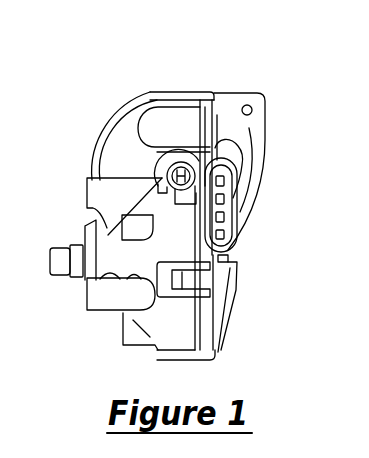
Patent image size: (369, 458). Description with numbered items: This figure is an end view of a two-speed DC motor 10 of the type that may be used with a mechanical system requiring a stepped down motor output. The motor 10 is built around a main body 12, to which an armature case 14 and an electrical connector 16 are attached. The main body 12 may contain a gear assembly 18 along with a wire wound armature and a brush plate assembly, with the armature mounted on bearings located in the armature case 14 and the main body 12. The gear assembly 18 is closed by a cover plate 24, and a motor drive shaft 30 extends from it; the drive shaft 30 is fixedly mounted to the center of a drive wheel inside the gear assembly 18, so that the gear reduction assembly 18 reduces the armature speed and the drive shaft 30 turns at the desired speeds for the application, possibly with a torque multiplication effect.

The two-speed DC motor 10 is at (232, 76).
The main body 12 is at (122, 328).
The armature case 14 is at (128, 106).
The electrical connector 16 is at (236, 230).
The gear assembly 18 is at (235, 339).
The cover plate 24 is at (238, 272).
The motor drive shaft 30 is at (77, 246).